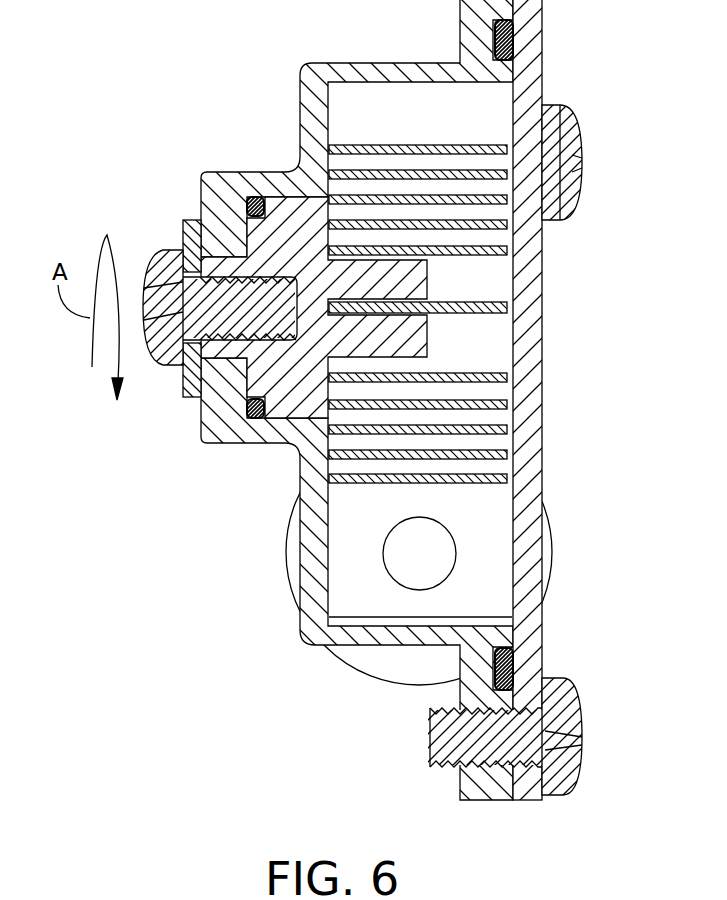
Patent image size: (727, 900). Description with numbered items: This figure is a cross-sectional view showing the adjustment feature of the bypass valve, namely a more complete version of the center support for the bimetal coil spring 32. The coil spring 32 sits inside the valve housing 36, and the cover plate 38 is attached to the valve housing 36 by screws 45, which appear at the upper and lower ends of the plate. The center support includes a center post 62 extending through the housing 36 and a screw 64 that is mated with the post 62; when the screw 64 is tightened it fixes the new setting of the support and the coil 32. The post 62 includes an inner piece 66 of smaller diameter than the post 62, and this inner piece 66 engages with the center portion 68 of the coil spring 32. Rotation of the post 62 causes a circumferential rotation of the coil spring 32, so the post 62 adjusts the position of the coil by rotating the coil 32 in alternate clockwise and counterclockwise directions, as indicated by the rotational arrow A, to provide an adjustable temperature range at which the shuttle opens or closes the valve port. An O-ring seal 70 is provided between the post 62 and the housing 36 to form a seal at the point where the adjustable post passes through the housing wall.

The bimetal coil spring 32 is at (412, 343).
The valve housing 36 is at (300, 112).
The cover plate 38 is at (543, 287).
The screws 45 is at (574, 188).
The center post 62 is at (288, 207).
The screw 64 is at (163, 255).
The inner piece 66 is at (498, 381).
The center portion 68 is at (493, 310).
The O-ring seal 70 is at (257, 415).